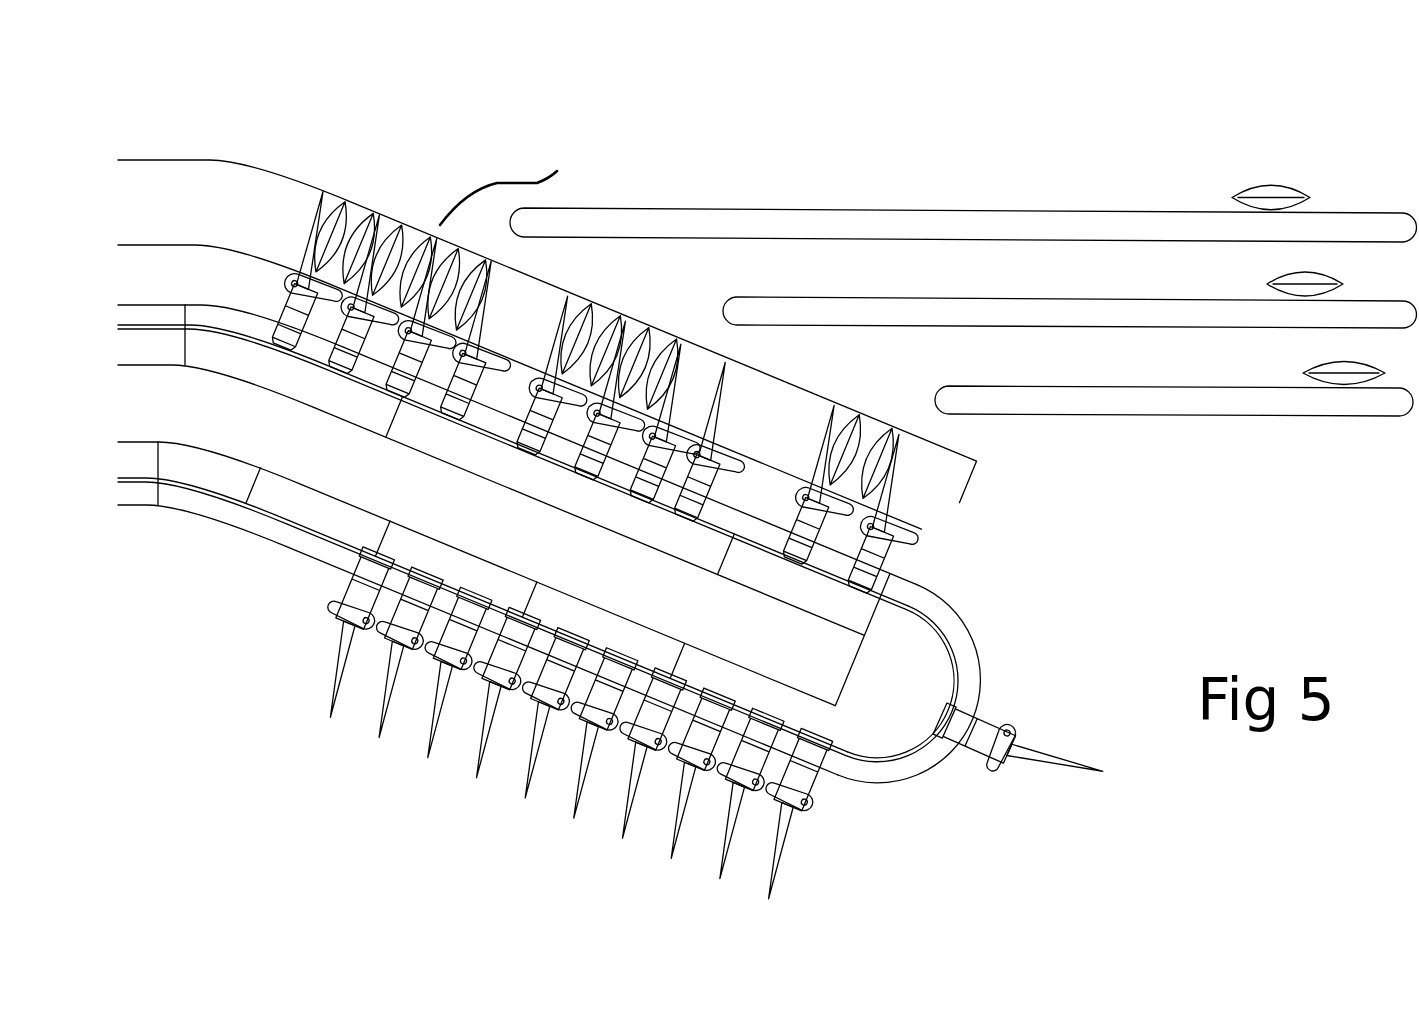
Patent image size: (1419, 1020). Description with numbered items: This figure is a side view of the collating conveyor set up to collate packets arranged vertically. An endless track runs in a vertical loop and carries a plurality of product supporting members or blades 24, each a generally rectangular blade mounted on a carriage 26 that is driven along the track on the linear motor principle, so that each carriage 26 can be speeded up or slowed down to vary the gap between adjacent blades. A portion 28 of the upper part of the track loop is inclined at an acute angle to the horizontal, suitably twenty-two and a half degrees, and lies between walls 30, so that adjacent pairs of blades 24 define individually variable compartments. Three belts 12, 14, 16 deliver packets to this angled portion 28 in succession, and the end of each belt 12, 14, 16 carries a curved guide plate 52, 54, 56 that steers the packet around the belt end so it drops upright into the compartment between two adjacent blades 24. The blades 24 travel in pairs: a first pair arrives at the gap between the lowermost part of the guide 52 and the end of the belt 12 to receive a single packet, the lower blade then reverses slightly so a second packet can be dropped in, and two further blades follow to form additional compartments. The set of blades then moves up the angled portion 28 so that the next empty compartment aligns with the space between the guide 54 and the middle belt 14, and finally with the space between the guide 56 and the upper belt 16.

The belt 12 is at (1245, 400).
The middle belt 14 is at (1337, 313).
The upper belt 16 is at (987, 220).
The product supporting members 24 is at (331, 223).
The carriage 26 is at (990, 727).
The angled portion of the track 28 is at (320, 510).
The walls 30 is at (250, 197).
The curved guide plate 52 is at (962, 339).
The curved guide plate 54 is at (757, 255).
The curved guide plate 56 is at (513, 183).